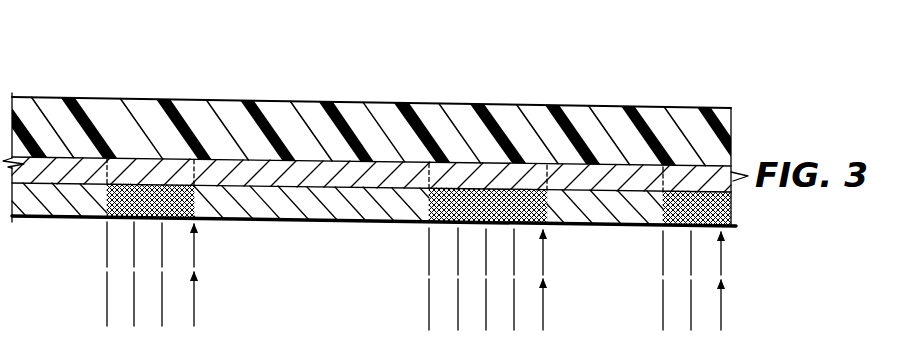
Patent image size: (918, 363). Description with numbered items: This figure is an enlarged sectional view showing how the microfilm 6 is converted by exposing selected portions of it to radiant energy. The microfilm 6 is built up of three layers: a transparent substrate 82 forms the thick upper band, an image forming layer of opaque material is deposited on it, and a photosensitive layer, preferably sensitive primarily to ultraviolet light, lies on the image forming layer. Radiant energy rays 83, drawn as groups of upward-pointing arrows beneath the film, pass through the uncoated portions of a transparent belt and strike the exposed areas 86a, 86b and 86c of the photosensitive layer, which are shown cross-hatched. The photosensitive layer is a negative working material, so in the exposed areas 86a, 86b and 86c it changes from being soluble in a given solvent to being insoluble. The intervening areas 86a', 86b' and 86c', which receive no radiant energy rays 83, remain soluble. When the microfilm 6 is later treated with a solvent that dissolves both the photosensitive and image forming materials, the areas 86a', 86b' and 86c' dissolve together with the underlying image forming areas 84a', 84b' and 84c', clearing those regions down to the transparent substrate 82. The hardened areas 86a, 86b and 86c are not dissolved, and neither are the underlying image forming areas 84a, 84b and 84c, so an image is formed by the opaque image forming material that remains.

The microfilm 6 is at (55, 68).
The transparent substrate 82 is at (397, 108).
The radiant energy rays 83 is at (100, 286).
The image forming layer area 84a is at (173, 116).
The image forming layer area 84a' is at (83, 114).
The image forming layer area 84b is at (488, 120).
The image forming layer area 84b' is at (311, 117).
The image forming layer area 84c is at (697, 124).
The image forming layer area 84c' is at (605, 122).
The exposed area of photosensitive layer 86a is at (187, 227).
The unexposed area of photosensitive layer 86a' is at (59, 224).
The exposed area of photosensitive layer 86b is at (452, 229).
The unexposed area of photosensitive layer 86b' is at (311, 244).
The exposed area of photosensitive layer 86c is at (734, 234).
The unexposed area of photosensitive layer 86c' is at (605, 231).